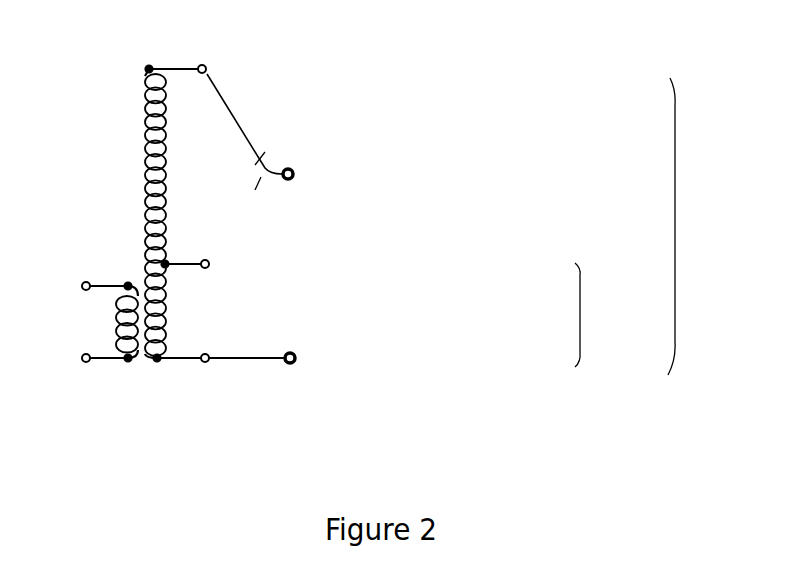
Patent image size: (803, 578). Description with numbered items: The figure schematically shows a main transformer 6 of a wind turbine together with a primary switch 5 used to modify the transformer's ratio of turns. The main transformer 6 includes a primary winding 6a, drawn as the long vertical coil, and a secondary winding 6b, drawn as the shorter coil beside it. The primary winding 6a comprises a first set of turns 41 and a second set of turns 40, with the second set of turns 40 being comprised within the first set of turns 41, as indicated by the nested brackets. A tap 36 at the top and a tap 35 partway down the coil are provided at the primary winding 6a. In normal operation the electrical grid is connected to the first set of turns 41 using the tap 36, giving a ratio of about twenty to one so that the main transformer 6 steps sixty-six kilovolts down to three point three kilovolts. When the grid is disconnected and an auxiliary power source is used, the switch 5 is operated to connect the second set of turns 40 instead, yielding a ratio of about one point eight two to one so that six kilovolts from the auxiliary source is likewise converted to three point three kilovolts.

The primary switch 5 is at (305, 138).
The main transformer 6 is at (230, 290).
The primary winding 6a is at (327, 346).
The secondary winding 6b is at (70, 322).
The tap 35 is at (235, 266).
The tap 36 is at (212, 56).
The second set of turns 40 is at (611, 315).
The first set of turns 41 is at (714, 226).